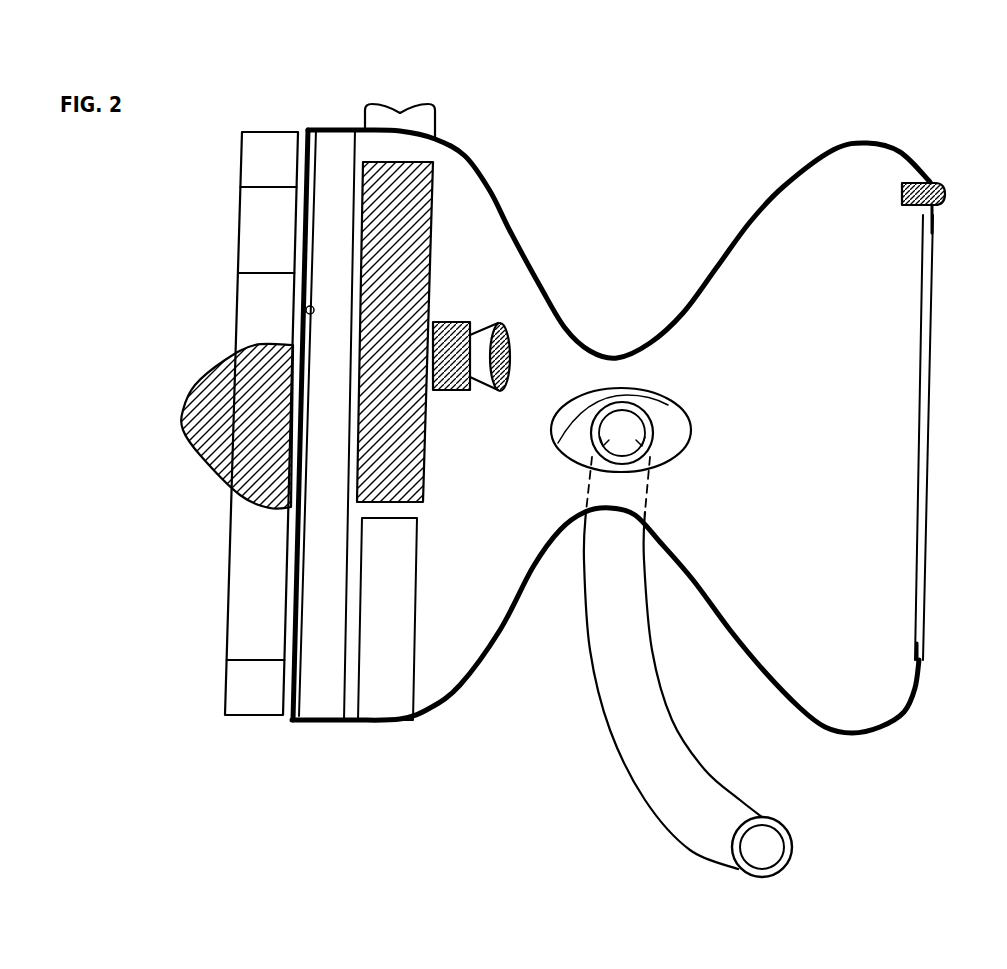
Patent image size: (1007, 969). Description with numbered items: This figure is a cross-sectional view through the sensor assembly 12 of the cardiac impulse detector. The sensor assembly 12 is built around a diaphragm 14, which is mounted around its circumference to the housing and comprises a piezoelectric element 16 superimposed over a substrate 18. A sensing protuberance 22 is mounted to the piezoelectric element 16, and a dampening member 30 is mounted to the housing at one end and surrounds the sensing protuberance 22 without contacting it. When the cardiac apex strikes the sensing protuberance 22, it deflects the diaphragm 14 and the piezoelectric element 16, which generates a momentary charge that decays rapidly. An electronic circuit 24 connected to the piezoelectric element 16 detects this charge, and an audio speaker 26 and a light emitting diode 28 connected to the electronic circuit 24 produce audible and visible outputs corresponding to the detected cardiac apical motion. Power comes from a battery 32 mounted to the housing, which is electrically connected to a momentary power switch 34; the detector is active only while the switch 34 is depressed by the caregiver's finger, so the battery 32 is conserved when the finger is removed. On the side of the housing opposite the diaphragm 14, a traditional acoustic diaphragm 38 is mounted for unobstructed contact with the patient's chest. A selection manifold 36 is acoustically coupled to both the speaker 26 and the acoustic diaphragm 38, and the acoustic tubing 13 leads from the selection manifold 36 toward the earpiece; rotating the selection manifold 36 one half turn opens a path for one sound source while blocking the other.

The sensor assembly 12 is at (634, 186).
The acoustic tubing 13 is at (591, 670).
The diaphragm 14 is at (287, 237).
The piezoelectric element 16 is at (296, 274).
The substrate 18 is at (306, 316).
The sensing protuberance 22 is at (207, 392).
The electronic circuit 24 is at (433, 177).
The audio speaker 26 is at (486, 318).
The light emitting diode 28 is at (940, 185).
The dampening member 30 is at (242, 152).
The battery 32 is at (413, 683).
The momentary power switch 34 is at (387, 107).
The selection manifold 36 is at (689, 425).
The acoustic diaphragm 38 is at (934, 340).